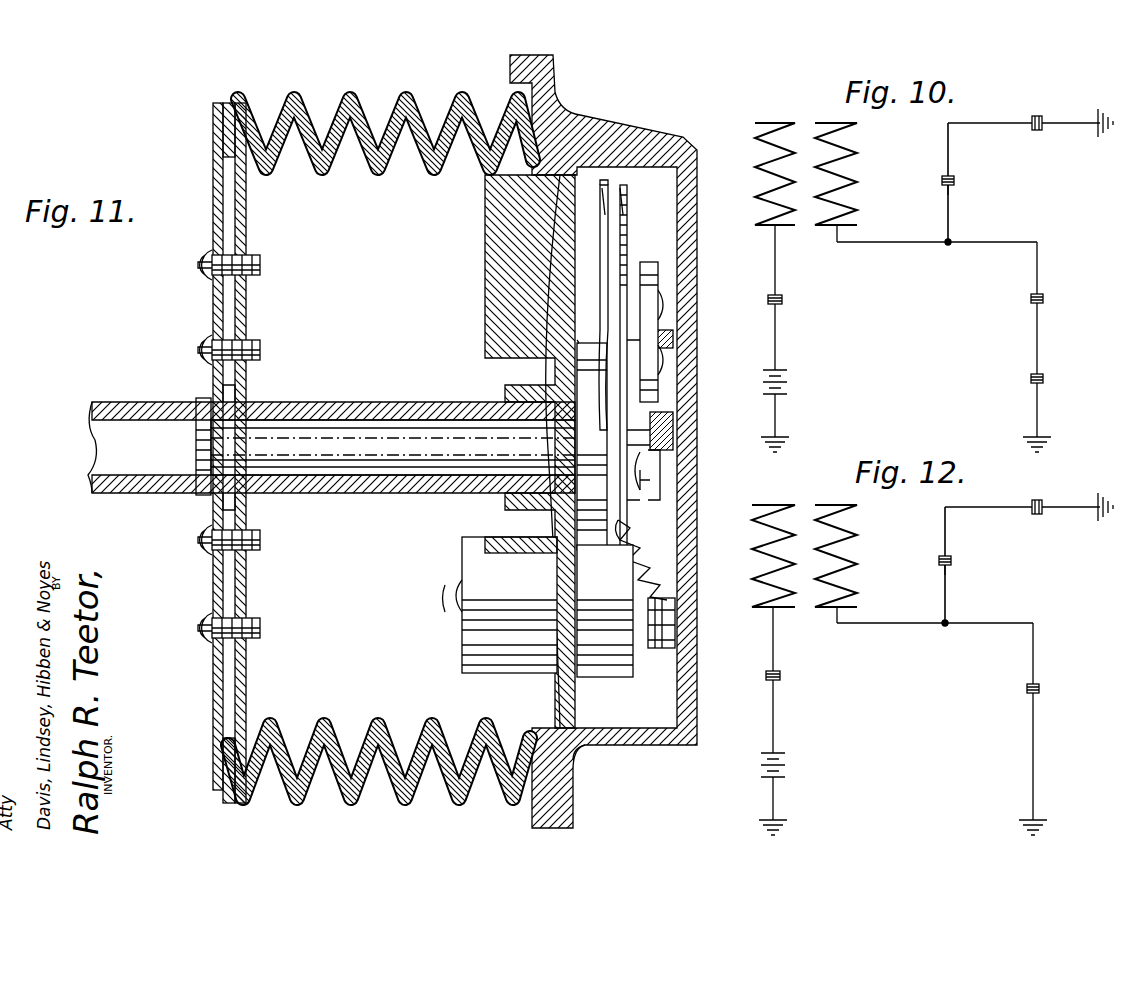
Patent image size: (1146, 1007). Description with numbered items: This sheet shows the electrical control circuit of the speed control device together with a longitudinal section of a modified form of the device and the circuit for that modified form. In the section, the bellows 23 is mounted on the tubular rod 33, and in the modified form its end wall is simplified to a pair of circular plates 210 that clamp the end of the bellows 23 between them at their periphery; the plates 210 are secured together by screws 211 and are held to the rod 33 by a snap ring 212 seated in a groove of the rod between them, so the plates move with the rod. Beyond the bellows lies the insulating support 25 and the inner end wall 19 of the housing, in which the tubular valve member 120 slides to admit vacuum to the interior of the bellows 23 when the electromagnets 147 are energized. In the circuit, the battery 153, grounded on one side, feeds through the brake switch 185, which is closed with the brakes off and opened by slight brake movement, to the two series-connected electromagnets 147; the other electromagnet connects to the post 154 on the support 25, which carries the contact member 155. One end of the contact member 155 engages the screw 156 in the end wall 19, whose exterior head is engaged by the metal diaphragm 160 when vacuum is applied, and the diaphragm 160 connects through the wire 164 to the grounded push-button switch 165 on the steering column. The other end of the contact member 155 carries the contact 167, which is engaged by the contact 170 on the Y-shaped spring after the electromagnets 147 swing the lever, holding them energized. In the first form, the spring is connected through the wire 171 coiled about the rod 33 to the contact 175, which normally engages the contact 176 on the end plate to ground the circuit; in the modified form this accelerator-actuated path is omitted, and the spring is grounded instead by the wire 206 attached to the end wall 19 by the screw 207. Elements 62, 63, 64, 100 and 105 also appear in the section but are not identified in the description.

In FIG. 11, the inner end wall 19 is at (690, 168).
In FIG. 11, the bellows 23 is at (405, 178).
In FIG. 11, the insulating support 25 is at (497, 259).
In FIG. 11, the tubular rod 33 is at (112, 400).
In FIG. 11, the collar 62 is at (198, 400).
In FIG. 11, the shaft 63 is at (345, 478).
In FIG. 11, the sleeve 64 is at (196, 448).
In FIG. 11, the contact strip 100 is at (607, 266).
In FIG. 11, the bracket 105 is at (660, 480).
In FIG. 11, the tubular valve member 120 is at (665, 295).
In FIG. 11, the electromagnets 147 is at (462, 612).
In FIG. 10, the electromagnets 147 is at (755, 152).
In FIG. 12, the electromagnets 147 is at (752, 545).
In FIG. 10, the battery 153 is at (788, 378).
In FIG. 12, the battery 153 is at (786, 768).
In FIG. 11, the post 154 is at (640, 338).
In FIG. 10, the post 154 is at (946, 246).
In FIG. 12, the post 154 is at (943, 627).
In FIG. 11, the contact member 155 is at (608, 238).
In FIG. 11, the screw 156 is at (650, 428).
In FIG. 10, the screw 156 is at (942, 184).
In FIG. 12, the screw 156 is at (939, 566).
In FIG. 10, the metal diaphragm 160 is at (942, 178).
In FIG. 12, the metal diaphragm 160 is at (939, 557).
In FIG. 10, the wire 164 is at (965, 125).
In FIG. 12, the wire 164 is at (968, 509).
In FIG. 10, the push-button switch 165 is at (1040, 131).
In FIG. 12, the push-button switch 165 is at (1040, 515).
In FIG. 11, the contact 167 is at (624, 185).
In FIG. 10, the contact 167 is at (1031, 296).
In FIG. 12, the contact 167 is at (1027, 686).
In FIG. 11, the contact 170 is at (606, 185).
In FIG. 10, the contact 170 is at (1031, 302).
In FIG. 12, the contact 170 is at (1027, 693).
In FIG. 10, the wire 171 is at (1037, 348).
In FIG. 10, the contact 175 is at (1028, 381).
In FIG. 10, the contact 176 is at (1040, 382).
In FIG. 10, the switch 185 is at (783, 298).
In FIG. 12, the switch 185 is at (781, 676).
In FIG. 11, the wire 206 is at (675, 555).
In FIG. 12, the wire 206 is at (1033, 762).
In FIG. 11, the screw 207 is at (655, 650).
In FIG. 11, the circular plates 210 is at (213, 222).
In FIG. 11, the screws 211 is at (262, 265).
In FIG. 11, the snap ring 212 is at (245, 392).